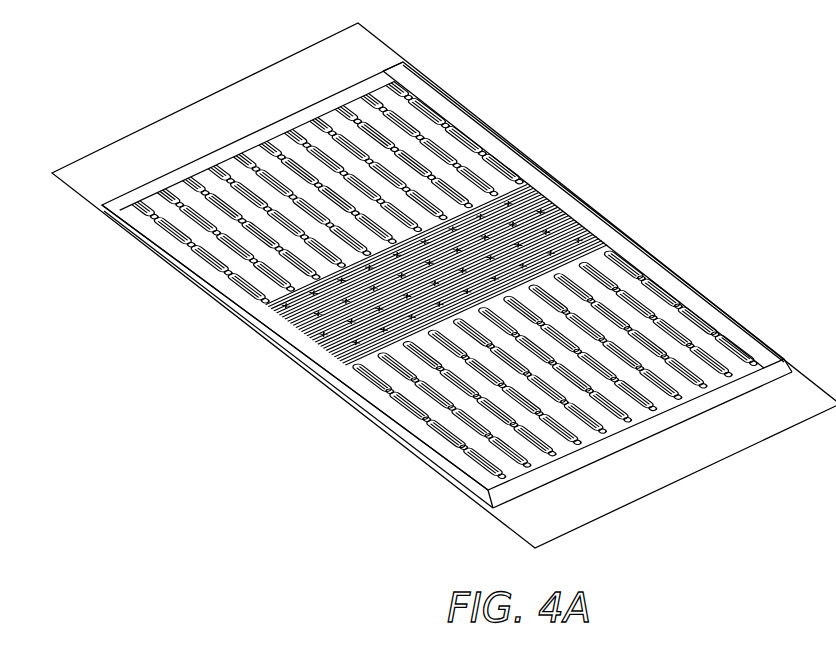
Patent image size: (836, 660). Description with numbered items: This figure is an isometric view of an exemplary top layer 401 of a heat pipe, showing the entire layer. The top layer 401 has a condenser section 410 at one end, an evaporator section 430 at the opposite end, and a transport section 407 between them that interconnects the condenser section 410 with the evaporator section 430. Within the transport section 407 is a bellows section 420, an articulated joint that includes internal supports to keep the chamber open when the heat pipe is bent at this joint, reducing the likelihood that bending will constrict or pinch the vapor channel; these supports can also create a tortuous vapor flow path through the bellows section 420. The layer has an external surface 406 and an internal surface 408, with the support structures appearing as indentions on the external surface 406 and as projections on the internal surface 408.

The top layer 401 is at (444, 285).
The external surface 406 is at (454, 272).
The transport section 407 is at (186, 270).
The internal surface 408 is at (678, 481).
The condenser section 410 is at (357, 108).
The bellows section 420 is at (597, 202).
The evaporator section 430 is at (722, 350).